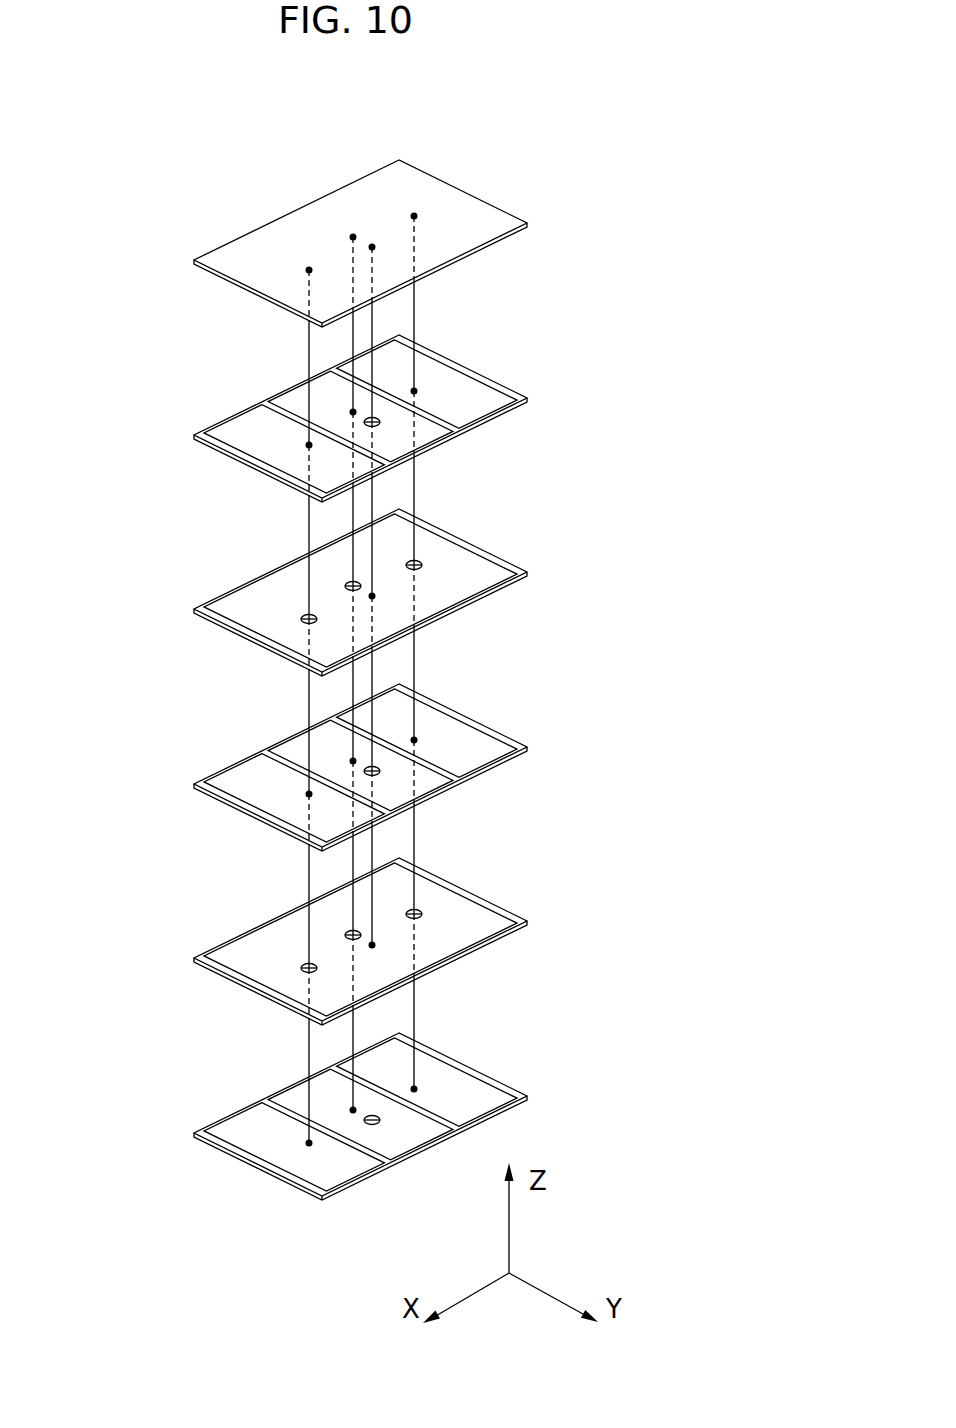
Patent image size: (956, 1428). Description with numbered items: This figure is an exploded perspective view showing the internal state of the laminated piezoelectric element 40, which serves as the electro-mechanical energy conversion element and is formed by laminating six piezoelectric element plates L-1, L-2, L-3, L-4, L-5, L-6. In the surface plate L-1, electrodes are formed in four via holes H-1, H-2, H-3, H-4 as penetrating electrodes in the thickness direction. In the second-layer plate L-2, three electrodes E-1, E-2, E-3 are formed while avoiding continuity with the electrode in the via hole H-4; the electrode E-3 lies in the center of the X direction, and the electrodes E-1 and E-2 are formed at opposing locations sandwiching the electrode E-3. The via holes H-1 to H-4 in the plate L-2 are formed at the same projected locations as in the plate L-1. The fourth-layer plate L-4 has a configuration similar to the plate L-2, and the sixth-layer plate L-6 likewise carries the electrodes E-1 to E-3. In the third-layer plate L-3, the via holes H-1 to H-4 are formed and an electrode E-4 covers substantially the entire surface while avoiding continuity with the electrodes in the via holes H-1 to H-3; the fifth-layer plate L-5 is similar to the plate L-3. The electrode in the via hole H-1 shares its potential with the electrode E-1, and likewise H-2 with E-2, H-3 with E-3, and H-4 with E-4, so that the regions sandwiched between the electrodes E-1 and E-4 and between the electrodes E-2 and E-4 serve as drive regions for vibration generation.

The laminated piezoelectric element 40 is at (130, 114).
The via hole H-1 is at (308, 267).
The via hole H-2 is at (415, 212).
The via hole H-3 is at (352, 234).
The via hole H-4 is at (372, 244).
The piezoelectric element plate L-1 is at (493, 217).
The piezoelectric element plate L-2 is at (495, 377).
The piezoelectric element plate L-3 is at (495, 549).
The piezoelectric element plate L-4 is at (495, 726).
The piezoelectric element plate L-5 is at (495, 898).
The piezoelectric element plate L-6 is at (495, 1075).
The electrode E-1 is at (258, 438).
The electrode E-2 is at (445, 383).
The electrode E-3 is at (333, 403).
The electrode E-4 is at (270, 588).